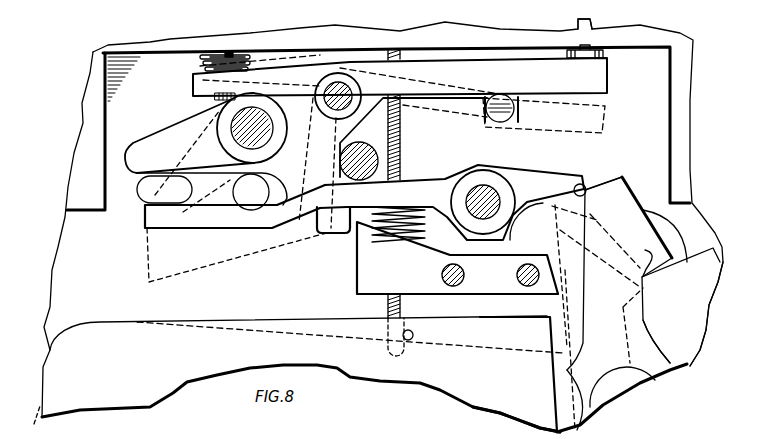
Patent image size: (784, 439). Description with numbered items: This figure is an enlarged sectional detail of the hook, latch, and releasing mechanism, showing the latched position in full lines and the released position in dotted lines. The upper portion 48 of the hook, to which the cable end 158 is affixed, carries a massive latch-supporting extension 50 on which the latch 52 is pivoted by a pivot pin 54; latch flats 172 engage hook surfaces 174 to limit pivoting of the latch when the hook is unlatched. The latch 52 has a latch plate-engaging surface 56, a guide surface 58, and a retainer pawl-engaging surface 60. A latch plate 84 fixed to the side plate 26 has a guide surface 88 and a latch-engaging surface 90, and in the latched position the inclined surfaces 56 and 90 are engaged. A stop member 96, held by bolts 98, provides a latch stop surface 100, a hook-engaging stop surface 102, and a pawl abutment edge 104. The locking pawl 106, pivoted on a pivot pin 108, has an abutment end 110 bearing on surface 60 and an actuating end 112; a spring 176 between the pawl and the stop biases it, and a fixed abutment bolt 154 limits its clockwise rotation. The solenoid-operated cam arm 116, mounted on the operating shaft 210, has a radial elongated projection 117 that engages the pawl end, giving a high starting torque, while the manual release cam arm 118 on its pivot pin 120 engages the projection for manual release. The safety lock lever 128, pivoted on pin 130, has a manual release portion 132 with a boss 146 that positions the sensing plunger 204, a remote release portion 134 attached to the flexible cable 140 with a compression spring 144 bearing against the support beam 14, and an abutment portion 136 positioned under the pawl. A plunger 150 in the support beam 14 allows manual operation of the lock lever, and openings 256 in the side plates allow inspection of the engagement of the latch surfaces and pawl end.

The support beam 14 is at (492, 32).
The side plate 26 is at (75, 222).
The upper portion of the hook 48 is at (183, 387).
The latch-supporting extension 50 is at (532, 414).
The latch 52 is at (618, 286).
The pivot pin 54 is at (640, 383).
The latch plate-engaging surface 56 is at (639, 257).
The guide surface 58 is at (605, 178).
The retainer pawl-engaging surface 60 is at (598, 232).
The latch plate 84 is at (705, 297).
The guide surface 88 is at (660, 317).
The latch-engaging surface 90 is at (670, 260).
The stop member 96 is at (416, 278).
The bolts 98 is at (517, 275).
The latch stop surface 100 is at (560, 277).
The hook-engaging stop surface 102 is at (490, 295).
The pawl abutment edge 104 is at (350, 233).
The locking pawl 106 is at (432, 183).
The pivot pin 108 is at (493, 192).
The abutment end 110 is at (580, 184).
The actuating end 112 is at (247, 226).
The solenoid-operated cam arm 116 is at (208, 178).
The radial elongated projection 117 is at (150, 188).
The manual release cam arm 118 is at (152, 147).
The pivot pin 120 is at (267, 125).
The safety lock lever 128 is at (444, 53).
The pivot pin 130 is at (340, 85).
The manual release portion 132 is at (603, 78).
The remote release portion 134 is at (262, 70).
The abutment portion 136 is at (385, 132).
The flexible cable 140 is at (225, 53).
The compression spring 144 is at (200, 60).
The boss 146 is at (520, 118).
The plunger 150 is at (593, 23).
The fixed abutment bolt 154 is at (367, 162).
The cable end 158 is at (420, 344).
The latch flats 172 is at (580, 420).
The hook surfaces 174 is at (552, 385).
The spring 176 is at (393, 233).
The plunger 204 is at (507, 100).
The operating shaft 210 is at (260, 192).
The openings 256 is at (540, 222).